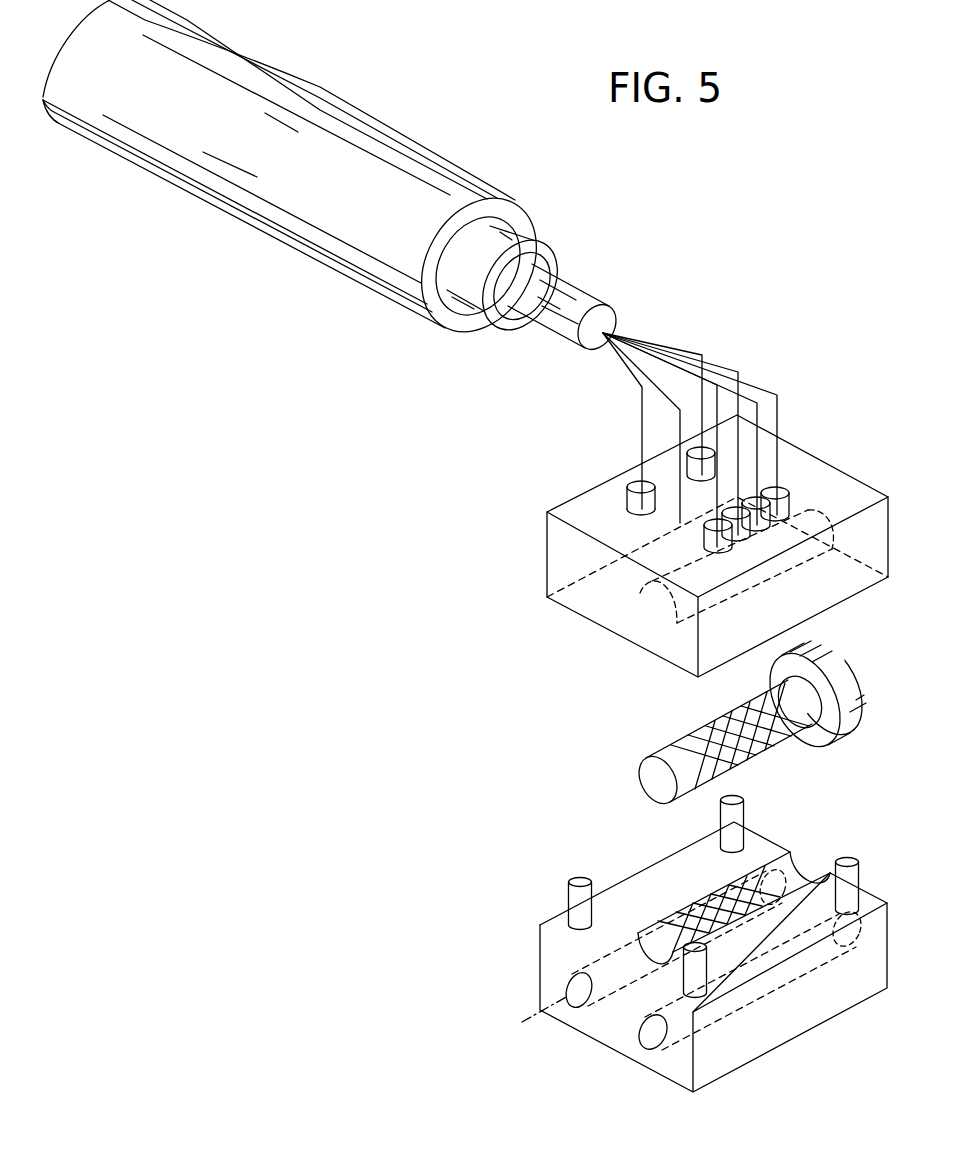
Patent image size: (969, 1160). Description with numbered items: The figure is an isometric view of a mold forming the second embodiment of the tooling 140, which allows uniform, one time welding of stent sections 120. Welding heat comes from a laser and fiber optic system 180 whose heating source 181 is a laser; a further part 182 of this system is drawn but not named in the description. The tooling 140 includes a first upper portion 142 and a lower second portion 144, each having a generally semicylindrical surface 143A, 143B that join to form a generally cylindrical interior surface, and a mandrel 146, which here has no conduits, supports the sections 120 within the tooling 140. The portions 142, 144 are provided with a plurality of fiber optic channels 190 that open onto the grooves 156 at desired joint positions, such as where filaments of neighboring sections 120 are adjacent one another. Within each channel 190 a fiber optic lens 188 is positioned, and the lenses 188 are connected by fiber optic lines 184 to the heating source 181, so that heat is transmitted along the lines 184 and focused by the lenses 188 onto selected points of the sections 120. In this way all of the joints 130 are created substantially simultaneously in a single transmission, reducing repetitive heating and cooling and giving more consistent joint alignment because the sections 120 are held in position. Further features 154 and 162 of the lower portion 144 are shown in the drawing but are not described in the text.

The laser and fiber optic system 180 is at (242, 285).
The heating source 181 is at (325, 90).
The shaft / tip of handle 182 is at (560, 243).
The fiber optic lines 184 is at (718, 387).
The tooling 140 is at (398, 590).
The first upper portion 142 is at (807, 440).
The semicylindrical surface 143A is at (640, 593).
The fiber optic lens 188 is at (632, 494).
The fiber optic channels 190 is at (627, 510).
The stent sections 120 is at (690, 727).
The joints 130 is at (778, 746).
The mandrel 146 is at (850, 675).
The lower second portion 144 is at (575, 1042).
The semicylindrical surface 143B is at (793, 853).
The grooves 156 is at (713, 883).
The alignment pins 154 is at (572, 912).
The hole 162 is at (566, 987).